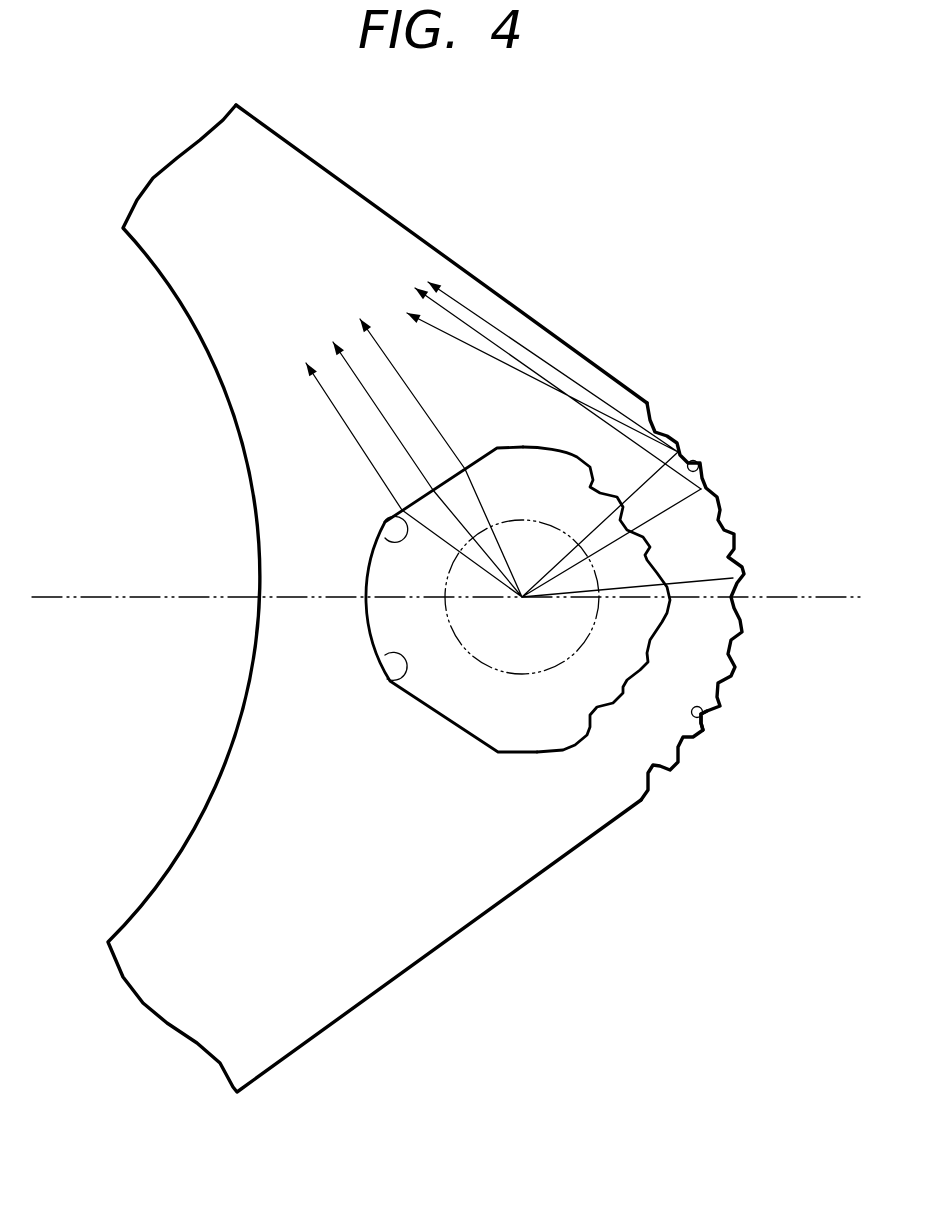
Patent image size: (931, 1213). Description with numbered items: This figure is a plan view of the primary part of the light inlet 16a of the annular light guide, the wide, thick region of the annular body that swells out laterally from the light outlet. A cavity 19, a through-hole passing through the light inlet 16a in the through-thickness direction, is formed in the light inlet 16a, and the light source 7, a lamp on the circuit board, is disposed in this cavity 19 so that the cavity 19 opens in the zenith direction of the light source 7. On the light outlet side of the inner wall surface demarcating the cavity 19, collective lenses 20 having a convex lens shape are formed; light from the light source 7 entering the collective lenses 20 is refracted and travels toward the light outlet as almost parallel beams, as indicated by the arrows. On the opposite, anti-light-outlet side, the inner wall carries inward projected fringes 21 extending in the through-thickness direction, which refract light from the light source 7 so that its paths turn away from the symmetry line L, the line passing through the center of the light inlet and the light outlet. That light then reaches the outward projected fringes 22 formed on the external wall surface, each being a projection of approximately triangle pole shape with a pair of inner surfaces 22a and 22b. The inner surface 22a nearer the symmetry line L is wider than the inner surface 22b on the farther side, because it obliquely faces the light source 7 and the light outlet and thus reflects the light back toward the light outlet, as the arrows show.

The light source 7 is at (538, 674).
The light inlet 16a is at (375, 962).
The cavity 19 is at (466, 702).
The collective lenses 20 is at (383, 538).
The inward projected fringes 21 is at (652, 646).
The outward projected fringes 22 is at (721, 497).
The inner surface 22a is at (694, 461).
The inner surface 22b is at (702, 727).
The symmetry line L is at (60, 600).